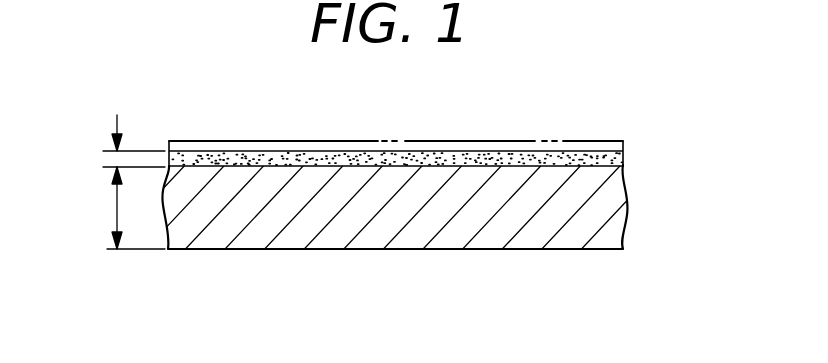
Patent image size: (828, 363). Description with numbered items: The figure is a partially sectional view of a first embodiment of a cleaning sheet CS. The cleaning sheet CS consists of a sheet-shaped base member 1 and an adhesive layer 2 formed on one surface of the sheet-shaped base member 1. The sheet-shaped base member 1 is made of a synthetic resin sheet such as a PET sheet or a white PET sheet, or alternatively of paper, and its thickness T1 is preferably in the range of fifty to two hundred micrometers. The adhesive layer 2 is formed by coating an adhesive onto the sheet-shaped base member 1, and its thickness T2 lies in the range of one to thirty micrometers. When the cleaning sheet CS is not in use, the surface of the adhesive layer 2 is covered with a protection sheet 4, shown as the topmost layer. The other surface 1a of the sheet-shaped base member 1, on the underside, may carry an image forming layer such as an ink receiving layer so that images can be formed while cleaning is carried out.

The sheet-shaped base member 1 is at (612, 203).
The other surface of the sheet-shaped base member 1a is at (252, 250).
The adhesive layer 2 is at (624, 158).
The protection sheet 4 is at (415, 141).
The cleaning sheet CS is at (632, 139).
The thickness of the sheet-shaped base member T1 is at (119, 208).
The thickness of the adhesive layer T2 is at (119, 144).